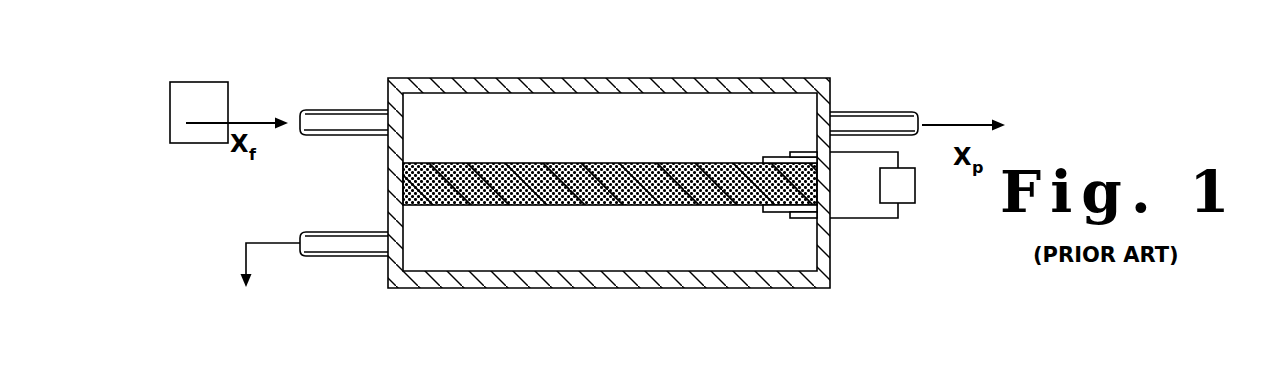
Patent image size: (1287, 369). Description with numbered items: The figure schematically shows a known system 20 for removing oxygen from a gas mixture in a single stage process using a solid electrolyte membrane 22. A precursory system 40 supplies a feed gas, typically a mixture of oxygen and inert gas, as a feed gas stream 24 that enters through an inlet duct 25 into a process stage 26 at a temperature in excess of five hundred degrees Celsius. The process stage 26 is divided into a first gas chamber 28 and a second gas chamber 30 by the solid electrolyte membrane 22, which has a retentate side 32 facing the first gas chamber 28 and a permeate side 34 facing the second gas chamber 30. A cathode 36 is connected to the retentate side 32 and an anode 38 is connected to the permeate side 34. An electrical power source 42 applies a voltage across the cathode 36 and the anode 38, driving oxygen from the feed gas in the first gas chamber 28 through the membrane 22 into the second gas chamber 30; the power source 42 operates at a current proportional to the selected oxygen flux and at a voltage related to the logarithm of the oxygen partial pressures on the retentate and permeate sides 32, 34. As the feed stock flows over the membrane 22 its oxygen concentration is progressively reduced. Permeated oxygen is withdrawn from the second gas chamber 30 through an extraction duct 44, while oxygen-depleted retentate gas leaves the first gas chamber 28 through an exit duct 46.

The known system 20 is at (621, 152).
The solid electrolyte membrane 22 is at (656, 152).
The feed gas stream 24 is at (262, 121).
The inlet duct 25 is at (340, 116).
The process stage 26 is at (452, 62).
The first gas chamber 28 is at (591, 103).
The second gas chamber 30 is at (622, 253).
The retentate side 32 is at (610, 146).
The permeate side 34 is at (507, 206).
The cathode 36 is at (770, 156).
The anode 38 is at (778, 212).
The precursory system 40 is at (190, 143).
The electrical power source 42 is at (905, 190).
The extraction duct 44 is at (355, 234).
The exit duct 46 is at (868, 122).